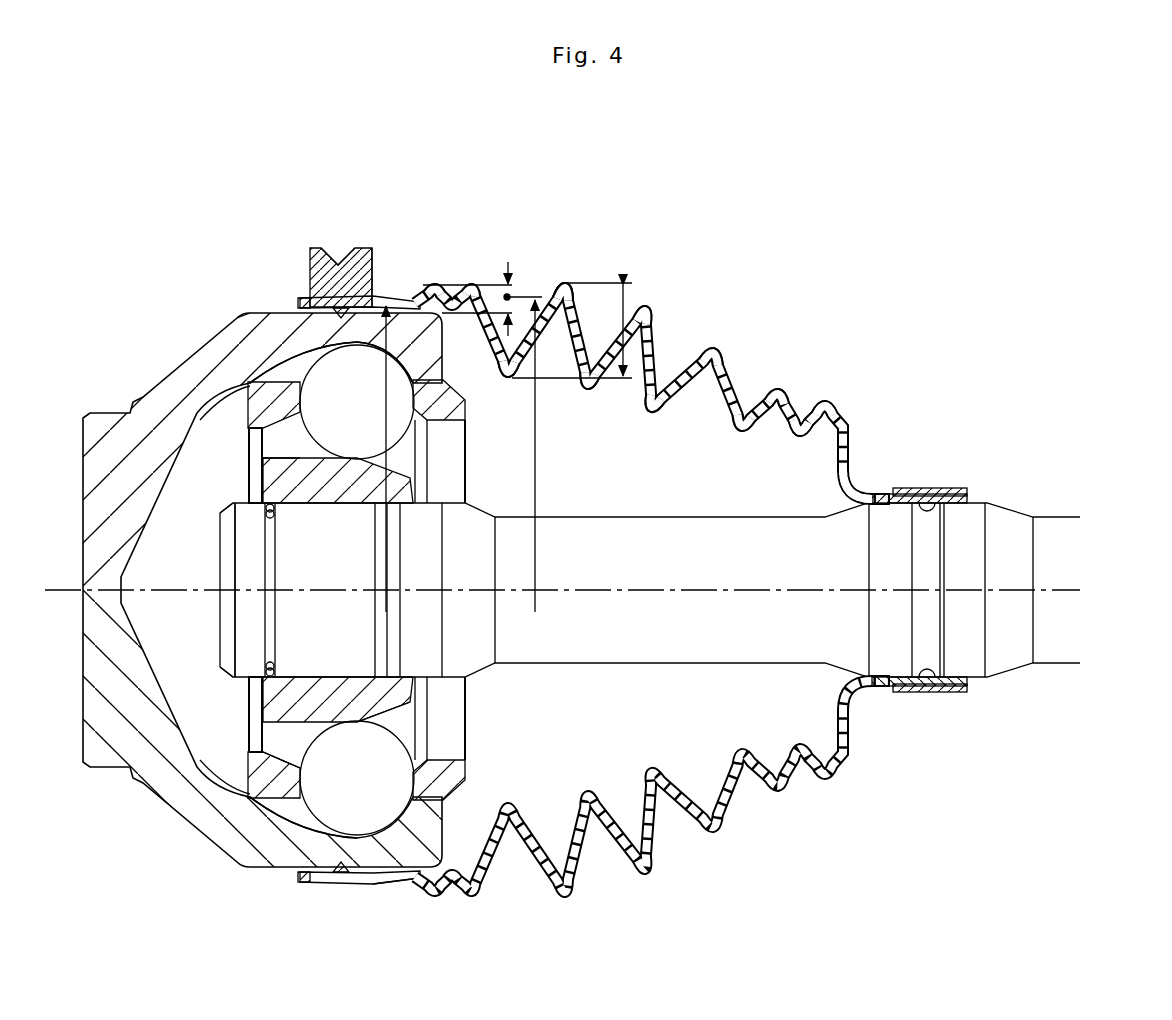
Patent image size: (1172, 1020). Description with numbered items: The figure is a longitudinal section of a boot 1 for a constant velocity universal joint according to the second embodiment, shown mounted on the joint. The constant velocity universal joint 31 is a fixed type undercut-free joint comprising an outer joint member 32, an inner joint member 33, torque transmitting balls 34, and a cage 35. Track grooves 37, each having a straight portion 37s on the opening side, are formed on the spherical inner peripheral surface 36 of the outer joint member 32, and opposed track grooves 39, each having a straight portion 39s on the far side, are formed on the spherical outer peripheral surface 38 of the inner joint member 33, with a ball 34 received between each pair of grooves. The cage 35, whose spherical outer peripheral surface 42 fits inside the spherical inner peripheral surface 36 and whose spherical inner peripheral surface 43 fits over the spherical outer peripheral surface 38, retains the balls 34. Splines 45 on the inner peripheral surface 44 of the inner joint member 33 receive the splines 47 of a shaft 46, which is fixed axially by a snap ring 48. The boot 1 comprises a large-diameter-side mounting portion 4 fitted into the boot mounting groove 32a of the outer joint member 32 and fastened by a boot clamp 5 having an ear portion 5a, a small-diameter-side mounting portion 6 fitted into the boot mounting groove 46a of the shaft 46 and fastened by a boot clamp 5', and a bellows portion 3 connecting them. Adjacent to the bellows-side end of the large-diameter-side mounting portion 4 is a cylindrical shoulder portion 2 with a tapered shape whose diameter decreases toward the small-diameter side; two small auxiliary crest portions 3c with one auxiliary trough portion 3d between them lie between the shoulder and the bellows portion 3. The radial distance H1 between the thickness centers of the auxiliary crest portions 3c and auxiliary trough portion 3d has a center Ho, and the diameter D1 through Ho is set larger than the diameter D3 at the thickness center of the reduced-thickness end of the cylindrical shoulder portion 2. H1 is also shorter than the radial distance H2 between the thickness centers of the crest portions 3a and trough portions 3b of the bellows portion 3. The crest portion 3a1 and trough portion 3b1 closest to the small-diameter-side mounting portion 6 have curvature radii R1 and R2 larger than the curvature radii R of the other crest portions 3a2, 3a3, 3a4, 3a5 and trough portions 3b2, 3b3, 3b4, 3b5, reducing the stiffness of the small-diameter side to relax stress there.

The boot for a constant velocity universal joint 1 is at (632, 563).
The cylindrical shoulder portion 2 is at (407, 296).
The bellows portion 3 is at (540, 300).
The crest portion 3a is at (566, 282).
The crest portion closest to the small-diameter-side mounting portion 3a1 is at (827, 400).
The crest portion 3a2 is at (778, 388).
The crest portion 3a3 is at (713, 347).
The crest portion 3a4 is at (645, 305).
The crest portion 3a5 is at (566, 282).
The trough portion 3b is at (508, 382).
The trough portion closest to the small-diameter-side mounting portion 3b1 is at (800, 440).
The trough portion 3b2 is at (742, 435).
The trough portion 3b3 is at (652, 416).
The trough portion 3b4 is at (588, 392).
The trough portion 3b5 is at (508, 382).
The auxiliary crest portion 3c is at (438, 282).
The auxiliary trough portion 3d is at (484, 300).
The large-diameter-side mounting portion 4 is at (350, 300).
The boot clamp 5 is at (334, 250).
The ear portion 5a is at (372, 292).
The boot clamp 5' is at (950, 711).
The small-diameter-side mounting portion 6 is at (930, 489).
The constant velocity universal joint 31 is at (272, 266).
The outer joint member 32 is at (240, 308).
The boot mounting groove 32a is at (355, 878).
The inner joint member 33 is at (420, 488).
The torque transmitting ball 34 is at (331, 800).
The cage 35 is at (470, 765).
The spherical inner peripheral surface 36 is at (278, 760).
The track groove 37 is at (252, 378).
The straight portion 37s is at (410, 346).
The spherical outer peripheral surface 38 is at (245, 800).
The track groove 39 is at (402, 720).
The straight portion 39s is at (262, 458).
The spherical outer peripheral surface 42 is at (415, 882).
The spherical inner peripheral surface 43 is at (290, 750).
The inner peripheral surface 44 is at (235, 556).
The splines 45 is at (235, 556).
The shaft 46 is at (1006, 498).
The boot mounting groove 46a is at (927, 686).
The splines 47 is at (262, 697).
The snap ring 48 is at (266, 512).
The curvature radius R is at (800, 428).
The curvature radius R1 is at (836, 406).
The curvature radius R2 is at (840, 462).
The radial distance H1 is at (508, 262).
The radial distance H2 is at (623, 330).
The center of the radial distance H1 Ho is at (508, 294).
The diameter D1 is at (540, 548).
The diameter D3 is at (386, 548).